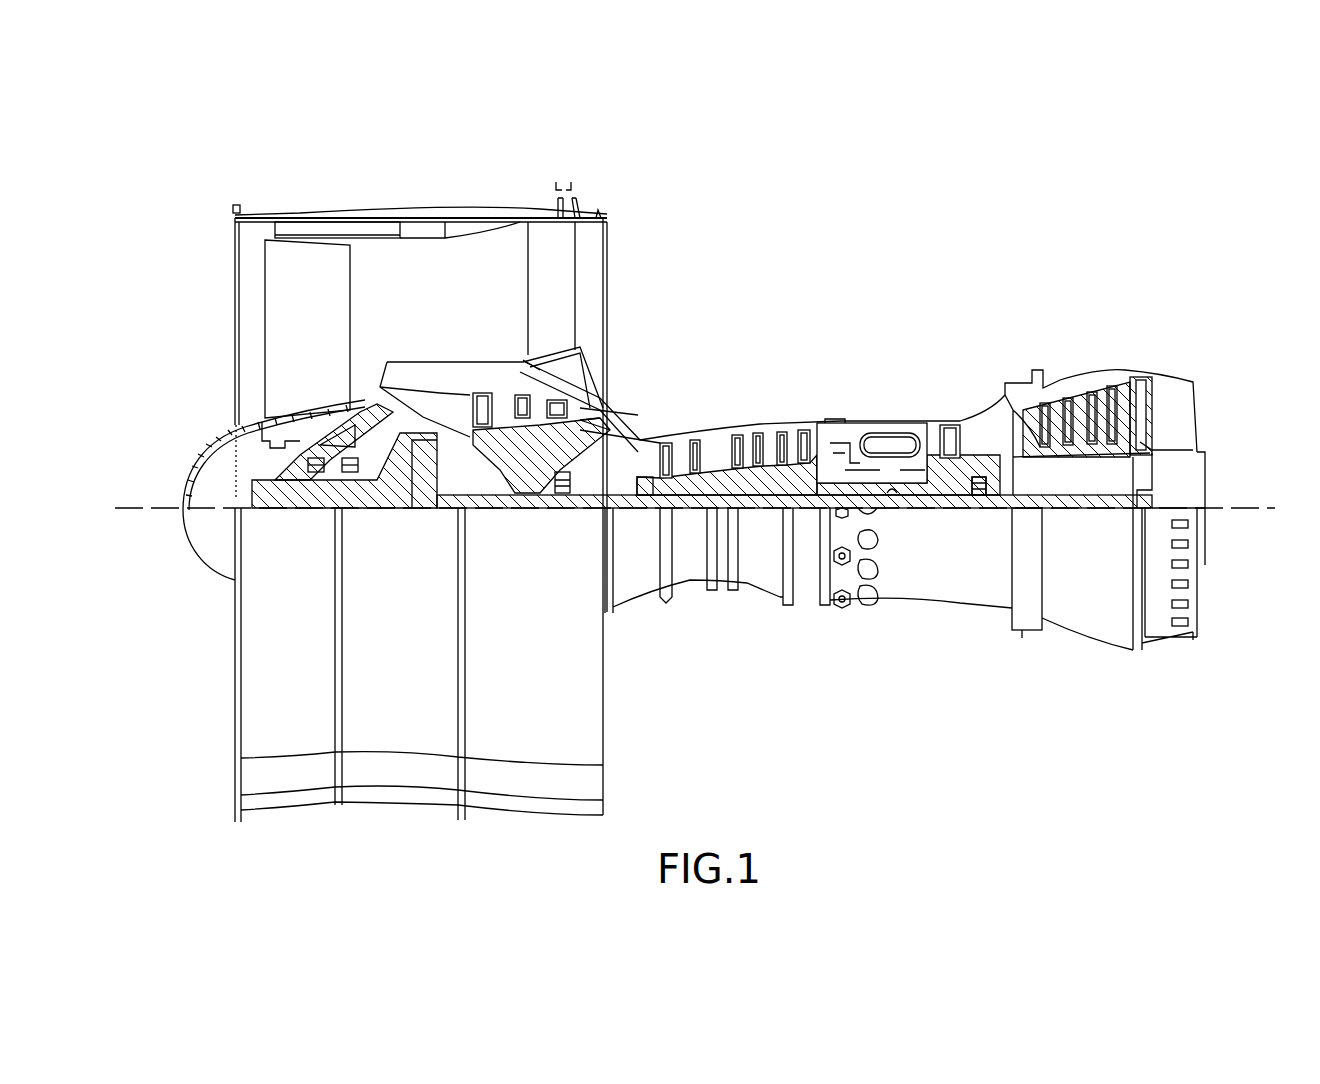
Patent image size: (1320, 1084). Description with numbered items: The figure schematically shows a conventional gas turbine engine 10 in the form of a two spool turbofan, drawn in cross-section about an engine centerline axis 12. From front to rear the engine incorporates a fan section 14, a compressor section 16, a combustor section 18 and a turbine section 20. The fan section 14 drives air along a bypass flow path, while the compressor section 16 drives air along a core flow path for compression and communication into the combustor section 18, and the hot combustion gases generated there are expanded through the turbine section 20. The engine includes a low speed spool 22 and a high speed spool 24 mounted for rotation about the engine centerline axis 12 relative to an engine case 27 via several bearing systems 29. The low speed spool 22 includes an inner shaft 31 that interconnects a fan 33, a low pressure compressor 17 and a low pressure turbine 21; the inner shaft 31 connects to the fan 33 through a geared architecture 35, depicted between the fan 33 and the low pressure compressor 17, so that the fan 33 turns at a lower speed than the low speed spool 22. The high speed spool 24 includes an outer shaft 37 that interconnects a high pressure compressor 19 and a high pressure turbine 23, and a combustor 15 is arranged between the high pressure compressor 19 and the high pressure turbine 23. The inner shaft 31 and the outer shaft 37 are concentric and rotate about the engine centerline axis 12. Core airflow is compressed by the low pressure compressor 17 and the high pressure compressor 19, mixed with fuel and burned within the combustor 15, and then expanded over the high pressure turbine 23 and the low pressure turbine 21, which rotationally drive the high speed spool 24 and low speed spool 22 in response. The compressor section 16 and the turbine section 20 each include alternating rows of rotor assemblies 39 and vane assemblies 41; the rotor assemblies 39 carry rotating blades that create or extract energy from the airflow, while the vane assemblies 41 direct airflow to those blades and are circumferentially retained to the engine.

The gas turbine engine 10 is at (918, 232).
The engine centerline axis 12 is at (1266, 506).
The fan section 14 is at (343, 198).
The combustor 15 is at (887, 445).
The compressor section 16 is at (642, 406).
The low pressure compressor 17 is at (538, 396).
The combustor section 18 is at (911, 411).
The high pressure compressor 19 is at (740, 472).
The turbine section 20 is at (1026, 358).
The low pressure turbine 21 is at (1082, 398).
The low speed spool 22 is at (762, 514).
The high pressure turbine 23 is at (950, 424).
The high speed spool 24 is at (805, 465).
The engine case 27 is at (798, 603).
The bearing systems 29 is at (562, 495).
The inner shaft 31 is at (626, 505).
The fan 33 is at (318, 328).
The geared architecture 35 is at (428, 487).
The outer shaft 37 is at (895, 492).
The rotor assemblies 39 is at (466, 410).
The vane assemblies 41 is at (498, 385).